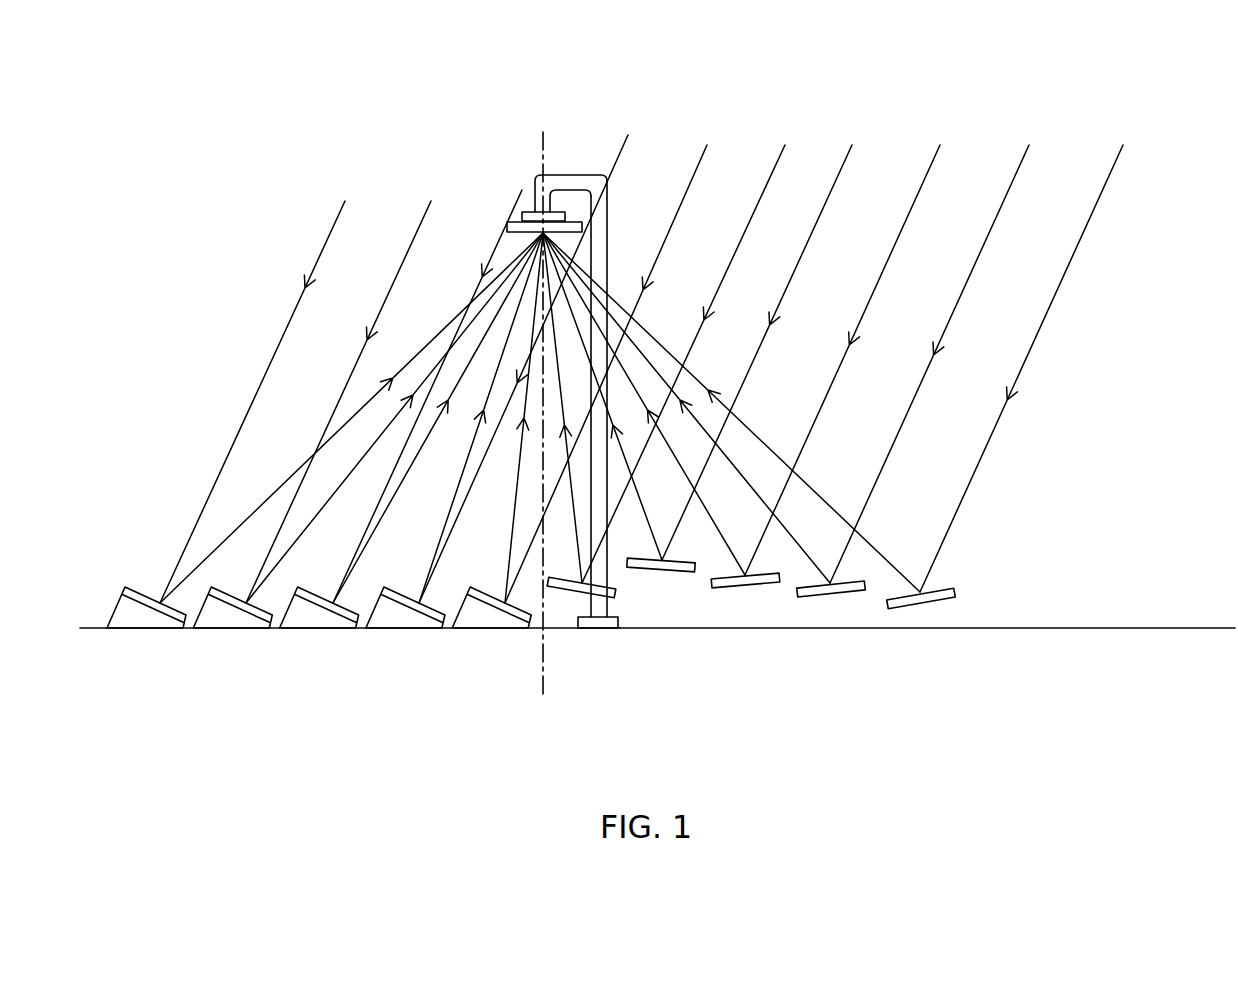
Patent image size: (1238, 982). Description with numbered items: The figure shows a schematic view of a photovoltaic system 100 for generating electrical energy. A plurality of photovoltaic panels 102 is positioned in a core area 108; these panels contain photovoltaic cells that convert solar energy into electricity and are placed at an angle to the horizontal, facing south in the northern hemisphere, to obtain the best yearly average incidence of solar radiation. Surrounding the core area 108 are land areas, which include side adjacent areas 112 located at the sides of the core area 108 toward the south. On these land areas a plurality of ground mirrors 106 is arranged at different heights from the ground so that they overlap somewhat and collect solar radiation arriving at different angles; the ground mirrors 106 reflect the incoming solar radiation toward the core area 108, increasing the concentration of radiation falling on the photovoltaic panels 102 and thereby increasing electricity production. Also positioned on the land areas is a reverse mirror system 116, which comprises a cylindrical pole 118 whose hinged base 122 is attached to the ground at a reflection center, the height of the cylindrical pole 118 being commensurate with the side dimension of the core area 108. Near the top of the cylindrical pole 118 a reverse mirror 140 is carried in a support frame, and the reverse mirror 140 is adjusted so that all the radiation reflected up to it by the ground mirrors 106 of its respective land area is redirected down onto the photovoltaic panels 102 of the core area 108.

The photovoltaic system 100 is at (554, 86).
The photovoltaic panels 102 is at (138, 585).
The ground mirrors 106 is at (948, 588).
The core area 108 is at (210, 630).
The side adjacent areas 112 is at (897, 628).
The reverse mirror system 116 is at (600, 157).
The cylindrical pole 118 is at (607, 235).
The hinged base 122 is at (598, 618).
The reverse mirror 140 is at (512, 245).